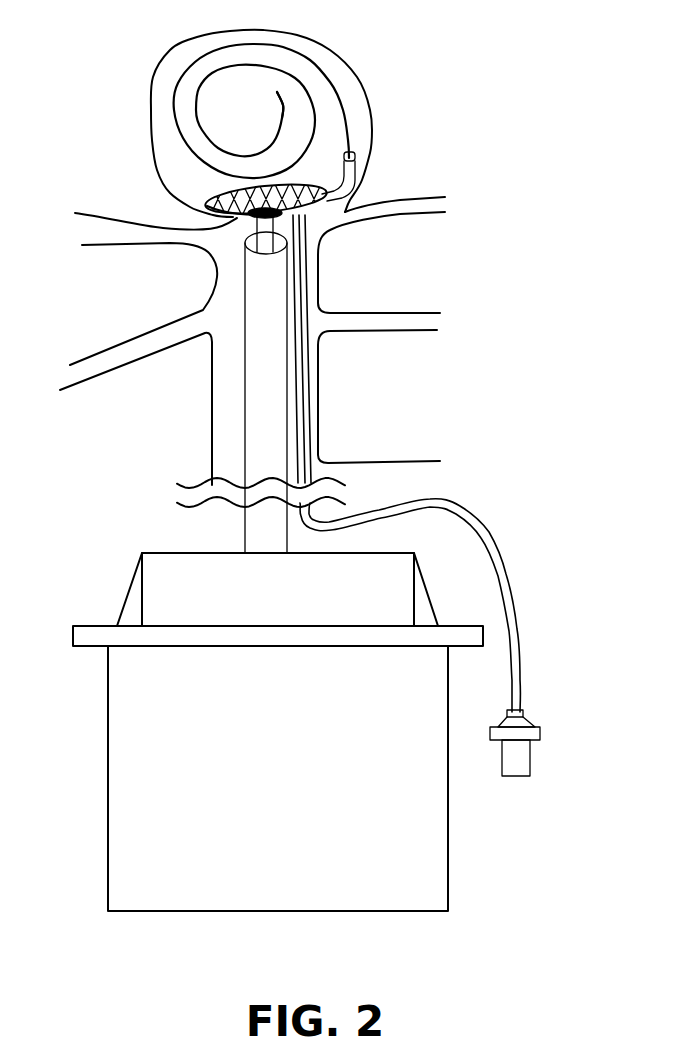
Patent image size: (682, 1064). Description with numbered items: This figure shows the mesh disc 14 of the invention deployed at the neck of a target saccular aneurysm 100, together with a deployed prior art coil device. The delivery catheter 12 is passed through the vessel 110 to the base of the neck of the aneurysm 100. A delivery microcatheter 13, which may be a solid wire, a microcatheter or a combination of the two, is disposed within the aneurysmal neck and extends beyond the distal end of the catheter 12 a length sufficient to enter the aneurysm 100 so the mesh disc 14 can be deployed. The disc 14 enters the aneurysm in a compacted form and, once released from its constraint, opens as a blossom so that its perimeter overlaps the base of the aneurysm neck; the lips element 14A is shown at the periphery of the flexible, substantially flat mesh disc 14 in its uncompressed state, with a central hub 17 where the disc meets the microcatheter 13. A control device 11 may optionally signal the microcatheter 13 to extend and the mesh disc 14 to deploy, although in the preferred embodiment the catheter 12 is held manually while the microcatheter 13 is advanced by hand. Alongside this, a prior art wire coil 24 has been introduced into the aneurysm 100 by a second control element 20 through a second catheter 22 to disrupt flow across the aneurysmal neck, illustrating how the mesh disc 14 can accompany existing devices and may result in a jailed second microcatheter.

The saccular aneurysm 100 is at (348, 68).
The wire coil 24 is at (285, 112).
The mesh disc 14 is at (205, 204).
The lips element 14A is at (227, 216).
The hub 17 is at (233, 216).
The delivery microcatheter 13 is at (253, 245).
The delivery catheter 12 is at (245, 430).
The vessel 110 is at (205, 300).
The second catheter 22 is at (305, 215).
The control device 11 is at (108, 777).
The control element 20 is at (530, 757).